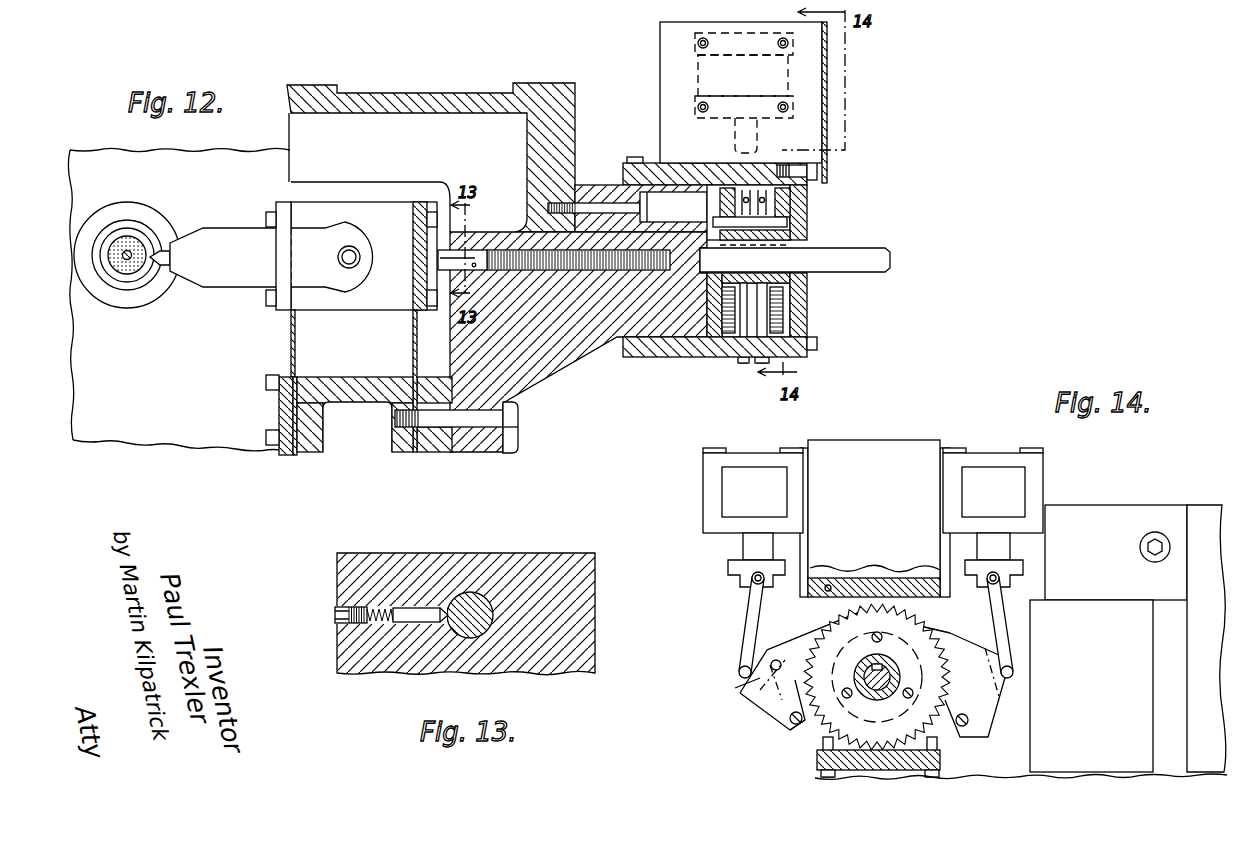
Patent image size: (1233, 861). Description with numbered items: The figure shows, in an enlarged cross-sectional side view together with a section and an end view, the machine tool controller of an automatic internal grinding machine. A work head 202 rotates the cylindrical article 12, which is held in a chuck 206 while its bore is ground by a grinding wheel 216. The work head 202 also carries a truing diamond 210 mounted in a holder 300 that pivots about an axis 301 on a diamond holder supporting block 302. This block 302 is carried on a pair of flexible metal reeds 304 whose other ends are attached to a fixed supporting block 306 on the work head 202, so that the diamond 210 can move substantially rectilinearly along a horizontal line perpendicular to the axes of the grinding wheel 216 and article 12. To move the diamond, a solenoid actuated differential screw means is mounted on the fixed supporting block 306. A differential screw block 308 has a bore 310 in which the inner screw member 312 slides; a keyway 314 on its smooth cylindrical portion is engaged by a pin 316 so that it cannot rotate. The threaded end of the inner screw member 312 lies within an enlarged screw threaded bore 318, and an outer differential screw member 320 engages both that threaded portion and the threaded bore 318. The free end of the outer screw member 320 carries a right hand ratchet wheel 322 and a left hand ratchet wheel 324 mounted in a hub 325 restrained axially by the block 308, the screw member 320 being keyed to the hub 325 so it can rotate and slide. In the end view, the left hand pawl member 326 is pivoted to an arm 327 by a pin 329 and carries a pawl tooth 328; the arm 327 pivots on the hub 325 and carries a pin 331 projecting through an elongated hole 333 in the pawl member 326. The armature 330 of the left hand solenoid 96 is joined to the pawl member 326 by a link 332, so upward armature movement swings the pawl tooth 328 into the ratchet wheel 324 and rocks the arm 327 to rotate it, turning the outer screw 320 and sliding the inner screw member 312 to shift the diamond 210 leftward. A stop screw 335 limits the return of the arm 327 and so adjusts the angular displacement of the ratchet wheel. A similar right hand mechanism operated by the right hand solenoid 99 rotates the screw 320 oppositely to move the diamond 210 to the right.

In FIG. 12, the article 12 is at (107, 232).
In FIG. 12, the grinding wheel 216 is at (130, 240).
In FIG. 12, the chuck 206 is at (106, 294).
In FIG. 12, the truing diamond 210 is at (150, 280).
In FIG. 12, the holder 300 is at (222, 236).
In FIG. 12, the axis 301 is at (356, 249).
In FIG. 12, the diamond holder supporting block 302 is at (336, 200).
In FIG. 12, the flexible metal reeds 304 is at (291, 346).
In FIG. 12, the fixed supporting block 306 is at (351, 378).
In FIG. 12, the work head 202 is at (243, 428).
In FIG. 14, the work head 202 is at (1197, 506).
In FIG. 12, the differential screw block 308 is at (546, 362).
In FIG. 13, the differential screw block 308 is at (566, 561).
In FIG. 14, the differential screw block 308 is at (911, 453).
In FIG. 12, the bore 310 is at (484, 268).
In FIG. 13, the bore 310 is at (502, 598).
In FIG. 12, the inner screw member 312 is at (479, 258).
In FIG. 13, the inner screw member 312 is at (472, 594).
In FIG. 13, the keyway 314 is at (448, 606).
In FIG. 13, the pin 316 is at (405, 606).
In FIG. 12, the screw threaded bore 318 is at (588, 281).
In FIG. 12, the outer differential screw member 320 is at (839, 246).
In FIG. 12, the right hand ratchet wheel 322 is at (720, 331).
In FIG. 12, the left hand ratchet wheel 324 is at (783, 320).
In FIG. 14, the left hand ratchet wheel 324 is at (827, 718).
In FIG. 12, the hub 325 is at (717, 225).
In FIG. 14, the hub 325 is at (877, 658).
In FIG. 12, the right hand solenoid 99 is at (698, 82).
In FIG. 14, the right hand solenoid 99 is at (1013, 498).
In FIG. 14, the left hand solenoid 96 is at (733, 489).
In FIG. 14, the armature 330 is at (745, 549).
In FIG. 14, the link 332 is at (745, 613).
In FIG. 14, the pin 331 is at (757, 654).
In FIG. 14, the left hand pawl member 326 is at (737, 681).
In FIG. 14, the elongated hole 333 is at (753, 690).
In FIG. 14, the pawl tooth 328 is at (798, 689).
In FIG. 14, the pin 329 is at (790, 725).
In FIG. 14, the arm 327 is at (801, 646).
In FIG. 14, the stop screw 335 is at (823, 746).